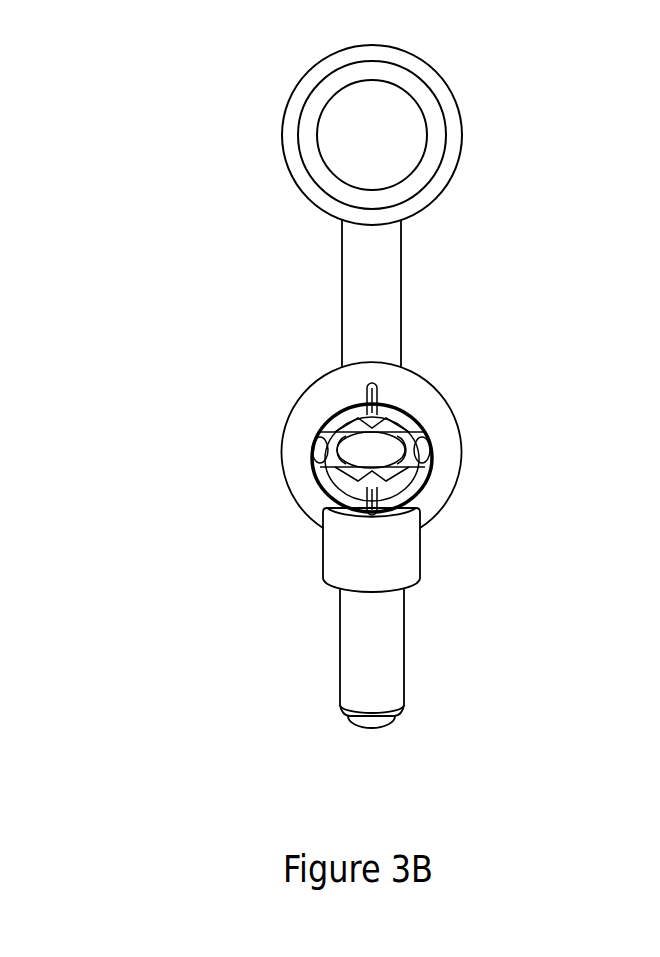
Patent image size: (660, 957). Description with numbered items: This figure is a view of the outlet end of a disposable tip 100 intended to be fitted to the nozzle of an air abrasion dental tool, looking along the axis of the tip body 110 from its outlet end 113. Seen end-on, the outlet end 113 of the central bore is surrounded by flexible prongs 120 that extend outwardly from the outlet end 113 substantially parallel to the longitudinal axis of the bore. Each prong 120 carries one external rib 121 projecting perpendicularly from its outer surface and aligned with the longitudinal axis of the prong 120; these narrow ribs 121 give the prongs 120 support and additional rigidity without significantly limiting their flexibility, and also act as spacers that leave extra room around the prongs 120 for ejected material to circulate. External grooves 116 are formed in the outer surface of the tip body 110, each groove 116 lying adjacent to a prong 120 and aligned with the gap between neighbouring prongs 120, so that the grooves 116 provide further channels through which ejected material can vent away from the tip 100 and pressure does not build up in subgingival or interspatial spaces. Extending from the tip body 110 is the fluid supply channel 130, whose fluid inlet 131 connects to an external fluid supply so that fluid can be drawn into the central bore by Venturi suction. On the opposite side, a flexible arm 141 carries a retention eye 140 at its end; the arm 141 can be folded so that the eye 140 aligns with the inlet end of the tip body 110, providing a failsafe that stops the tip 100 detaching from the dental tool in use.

The disposable tip 100 is at (213, 310).
The tip body 110 is at (442, 395).
The outlet end 113 is at (362, 447).
The external groove 116 is at (421, 453).
The flexible prong 120 is at (390, 415).
The external rib 121 is at (371, 395).
The fluid supply channel 130 is at (382, 647).
The fluid inlet 131 is at (373, 730).
The retention eye 140 is at (455, 133).
The flexible arm 141 is at (377, 278).